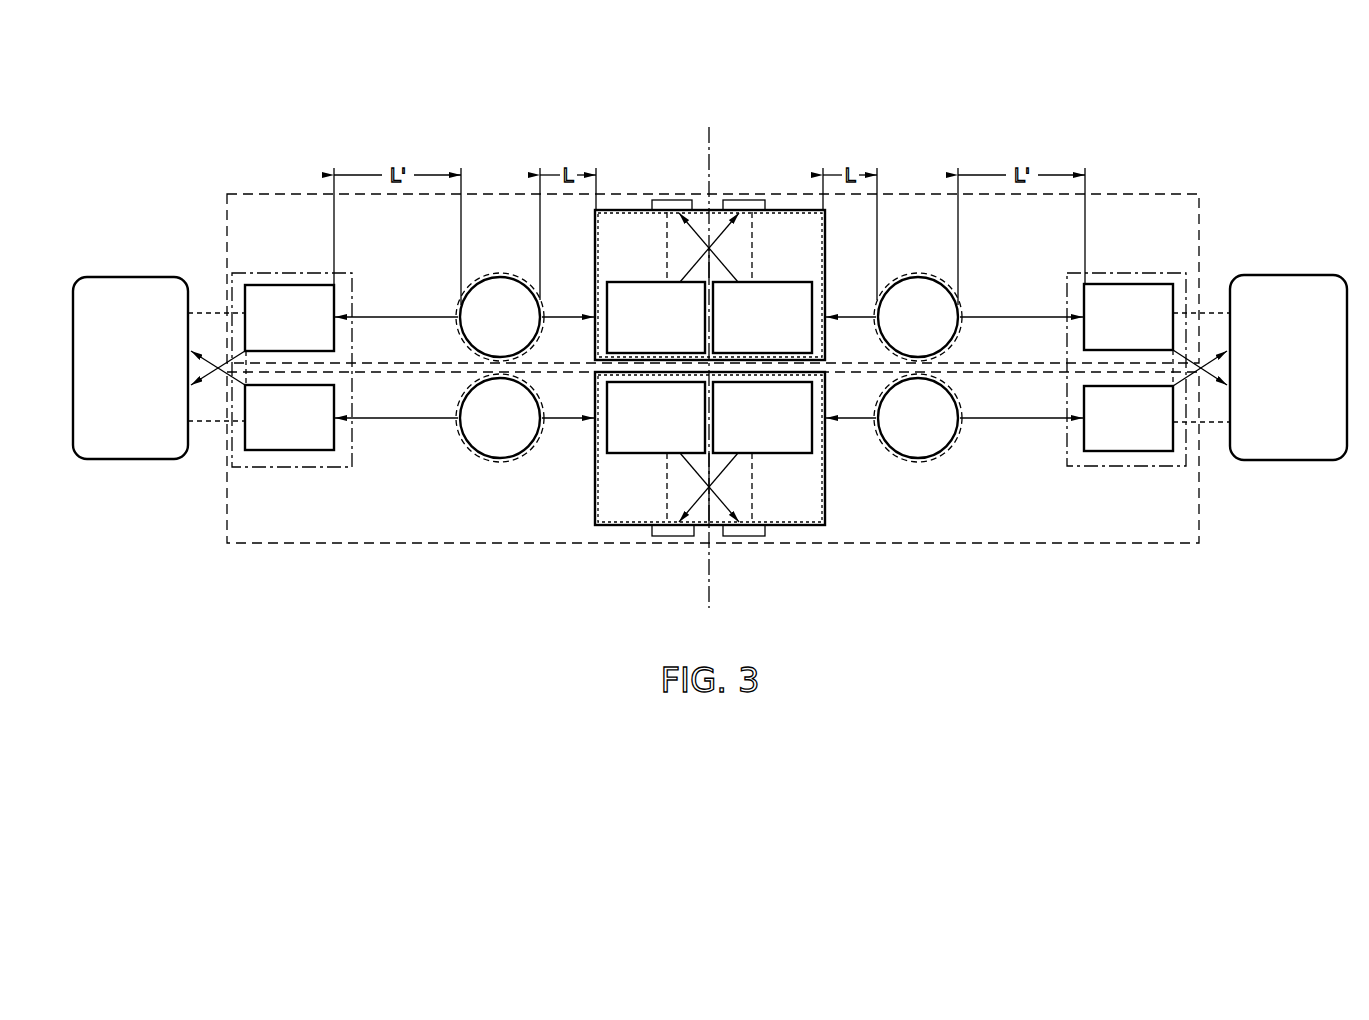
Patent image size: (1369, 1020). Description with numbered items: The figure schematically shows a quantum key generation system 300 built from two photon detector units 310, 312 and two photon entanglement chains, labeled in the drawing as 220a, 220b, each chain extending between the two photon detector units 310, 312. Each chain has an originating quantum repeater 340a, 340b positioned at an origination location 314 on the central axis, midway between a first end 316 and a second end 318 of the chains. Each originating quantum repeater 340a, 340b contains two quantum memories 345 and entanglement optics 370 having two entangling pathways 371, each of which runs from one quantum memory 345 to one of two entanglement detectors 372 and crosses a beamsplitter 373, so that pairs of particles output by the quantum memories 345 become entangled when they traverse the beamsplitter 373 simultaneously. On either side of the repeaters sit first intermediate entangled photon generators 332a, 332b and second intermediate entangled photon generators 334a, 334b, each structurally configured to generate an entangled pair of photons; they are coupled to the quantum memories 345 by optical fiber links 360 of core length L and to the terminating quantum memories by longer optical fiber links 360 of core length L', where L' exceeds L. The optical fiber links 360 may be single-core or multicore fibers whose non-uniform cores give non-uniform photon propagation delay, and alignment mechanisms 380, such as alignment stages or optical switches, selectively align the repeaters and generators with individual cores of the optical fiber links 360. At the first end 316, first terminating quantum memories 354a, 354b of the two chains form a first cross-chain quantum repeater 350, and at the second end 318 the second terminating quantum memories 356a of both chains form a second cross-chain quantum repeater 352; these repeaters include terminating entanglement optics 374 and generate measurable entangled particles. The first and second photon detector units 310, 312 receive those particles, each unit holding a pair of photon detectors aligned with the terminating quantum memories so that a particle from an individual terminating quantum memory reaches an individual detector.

The quantum key generation system 300 is at (1094, 138).
The photon detector unit 310 is at (118, 277).
The photon detector unit 312 is at (1308, 275).
The origination location 314 is at (709, 140).
The first end 316 is at (143, 194).
The second end 318 is at (1273, 194).
The first fluid circuit 220a is at (227, 244).
The second fluid circuit 220b is at (227, 490).
The first intermediate entangled photon generator 332a is at (500, 276).
The first intermediate entangled photon generator 332b is at (500, 459).
The second intermediate entangled photon generator 334a is at (918, 276).
The second intermediate entangled photon generator 334b is at (918, 459).
The originating quantum repeater 340a is at (783, 210).
The originating quantum repeater 340b is at (783, 527).
The quantum memory 345 is at (638, 329).
The first cross-chain quantum repeater 350 is at (345, 467).
The second cross-chain quantum repeater 352 is at (1068, 466).
The first terminating quantum memory 354a is at (310, 285).
The first terminating quantum memory 354b is at (310, 450).
The second terminating quantum memory 356a is at (1107, 284).
The optical fiber link 360 is at (420, 317).
The entanglement optics 370 is at (753, 250).
The entangling pathway 371 is at (240, 336).
The entanglement detector 372 is at (670, 200).
The beamsplitter 373 is at (205, 368).
The terminating entanglement optics 374 is at (210, 424).
The alignment mechanism 380 is at (456, 330).